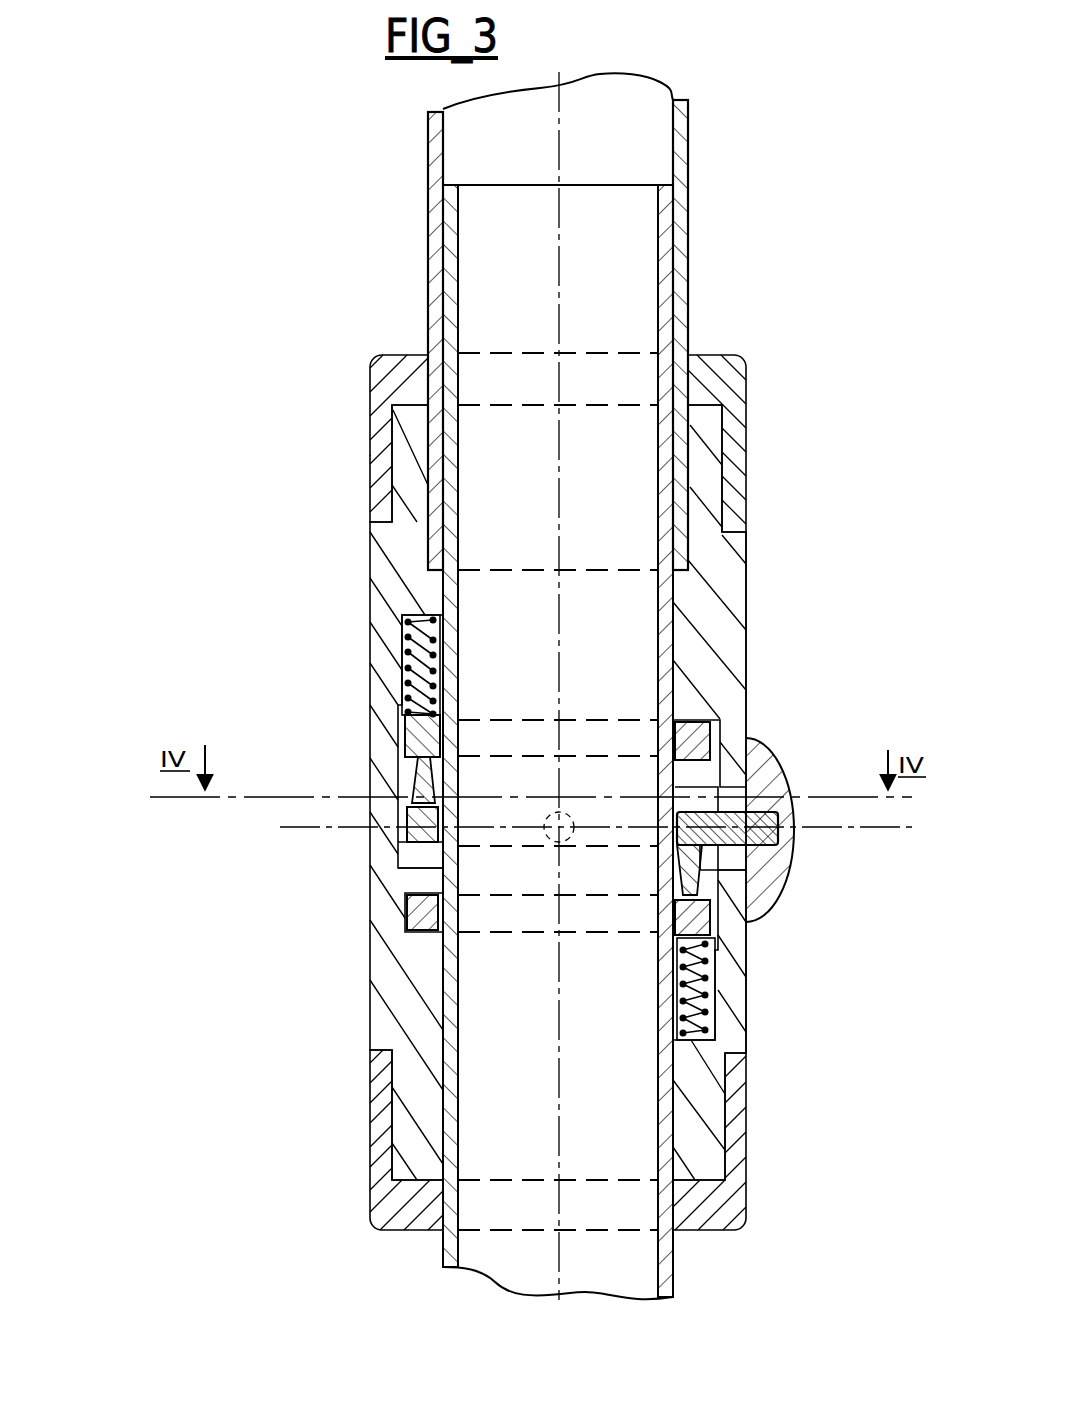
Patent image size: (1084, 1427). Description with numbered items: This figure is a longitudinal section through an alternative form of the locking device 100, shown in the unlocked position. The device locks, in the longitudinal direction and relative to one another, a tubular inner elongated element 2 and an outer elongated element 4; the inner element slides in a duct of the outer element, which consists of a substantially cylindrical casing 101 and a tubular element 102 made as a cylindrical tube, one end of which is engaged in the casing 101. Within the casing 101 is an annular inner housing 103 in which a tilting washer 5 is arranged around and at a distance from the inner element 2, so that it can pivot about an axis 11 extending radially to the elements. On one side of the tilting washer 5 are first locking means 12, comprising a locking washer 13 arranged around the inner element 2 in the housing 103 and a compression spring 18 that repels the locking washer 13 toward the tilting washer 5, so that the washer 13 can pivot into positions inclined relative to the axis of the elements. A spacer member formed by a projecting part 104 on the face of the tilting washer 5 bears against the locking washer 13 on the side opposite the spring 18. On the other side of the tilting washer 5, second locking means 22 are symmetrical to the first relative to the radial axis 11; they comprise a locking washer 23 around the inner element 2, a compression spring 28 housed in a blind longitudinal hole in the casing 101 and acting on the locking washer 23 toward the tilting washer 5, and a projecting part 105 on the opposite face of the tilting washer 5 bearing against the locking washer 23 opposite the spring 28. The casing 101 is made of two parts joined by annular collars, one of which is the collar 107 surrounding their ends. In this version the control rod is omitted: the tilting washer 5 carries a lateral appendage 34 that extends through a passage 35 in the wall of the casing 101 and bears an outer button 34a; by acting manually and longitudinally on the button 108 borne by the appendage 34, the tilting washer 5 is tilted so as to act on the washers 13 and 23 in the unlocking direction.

The tubular inner elongated element 2 is at (453, 1235).
The outer elongated element 4 is at (350, 454).
The tilting washer 5 is at (703, 775).
The axis 11 is at (555, 993).
The first locking means 12 is at (732, 938).
The locking washer 13 is at (405, 905).
The compression spring 18 is at (714, 1002).
The second locking means 22 is at (390, 781).
The locking washer 23 is at (402, 712).
The compression spring 28 is at (410, 656).
The lateral appendage 34 is at (745, 792).
The outer button 34a is at (736, 862).
The passage 35 is at (708, 870).
The locking device 100 is at (724, 645).
The casing 101 is at (750, 578).
The tubular element 102 is at (688, 188).
The annular inner housing 103 is at (400, 850).
The projecting part 104 is at (700, 876).
The projecting part 105 is at (410, 765).
The annular collar 107 is at (730, 380).
The button 108 is at (732, 1210).